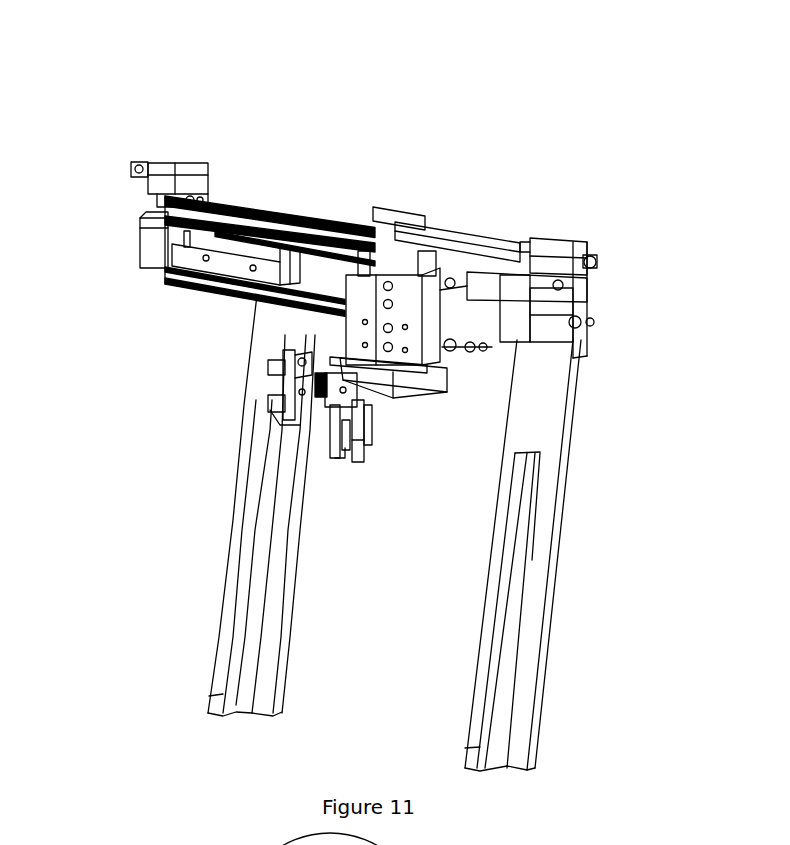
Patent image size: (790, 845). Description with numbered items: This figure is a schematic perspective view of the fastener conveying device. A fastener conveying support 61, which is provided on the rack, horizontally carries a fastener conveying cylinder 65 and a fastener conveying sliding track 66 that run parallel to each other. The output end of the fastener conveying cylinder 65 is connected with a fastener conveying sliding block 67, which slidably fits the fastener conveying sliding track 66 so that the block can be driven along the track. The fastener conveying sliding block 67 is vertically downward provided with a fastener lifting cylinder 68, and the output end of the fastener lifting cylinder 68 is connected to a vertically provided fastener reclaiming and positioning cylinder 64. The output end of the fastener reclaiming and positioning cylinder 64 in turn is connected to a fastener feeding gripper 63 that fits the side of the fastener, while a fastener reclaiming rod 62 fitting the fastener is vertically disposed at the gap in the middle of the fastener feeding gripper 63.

The fastener conveying support 61 is at (540, 412).
The fastener reclaiming rod 62 is at (363, 463).
The fastener feeding gripper 63 is at (327, 433).
The fastener reclaiming and positioning cylinder 64 is at (262, 403).
The fastener conveying cylinder 65 is at (226, 265).
The fastener conveying sliding track 66 is at (324, 214).
The fastener conveying sliding block 67 is at (442, 223).
The fastener lifting cylinder 68 is at (490, 228).